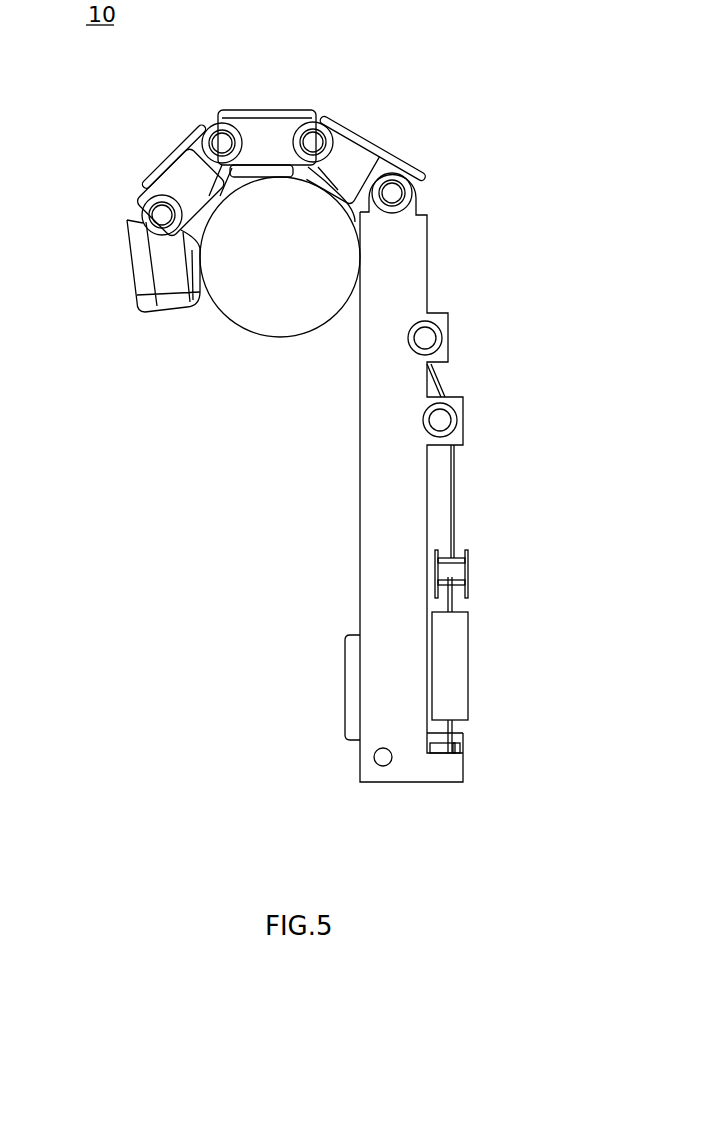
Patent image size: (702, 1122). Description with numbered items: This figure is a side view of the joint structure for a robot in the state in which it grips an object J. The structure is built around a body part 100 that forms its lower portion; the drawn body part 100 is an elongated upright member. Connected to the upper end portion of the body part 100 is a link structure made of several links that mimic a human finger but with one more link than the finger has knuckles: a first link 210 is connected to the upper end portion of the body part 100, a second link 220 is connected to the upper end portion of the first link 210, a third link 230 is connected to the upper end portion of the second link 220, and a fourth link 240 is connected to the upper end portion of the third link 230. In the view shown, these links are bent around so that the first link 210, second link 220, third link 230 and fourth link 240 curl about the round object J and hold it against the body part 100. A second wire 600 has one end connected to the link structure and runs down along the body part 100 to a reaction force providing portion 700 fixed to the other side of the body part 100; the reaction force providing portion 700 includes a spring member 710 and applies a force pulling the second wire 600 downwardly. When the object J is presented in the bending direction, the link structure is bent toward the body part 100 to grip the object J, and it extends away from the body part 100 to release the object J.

The body part 100 is at (372, 517).
The first link 210 is at (360, 142).
The second link 220 is at (263, 133).
The third link 230 is at (182, 178).
The fourth link 240 is at (157, 265).
The object J is at (275, 338).
The second wire 600 is at (453, 495).
The reaction force providing portion 700 is at (494, 651).
The spring member 710 is at (453, 683).